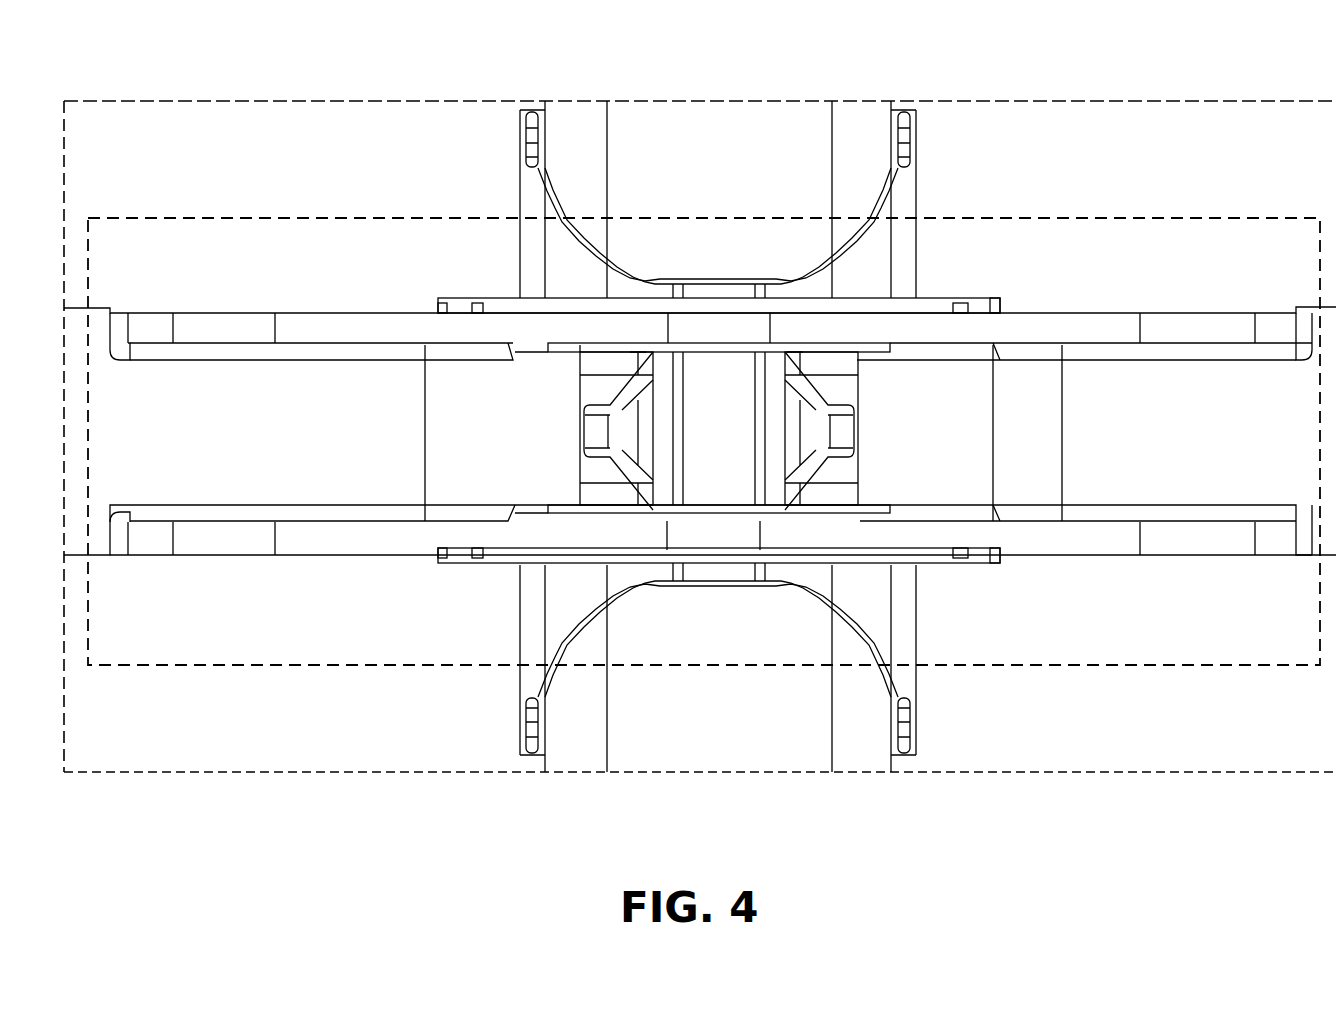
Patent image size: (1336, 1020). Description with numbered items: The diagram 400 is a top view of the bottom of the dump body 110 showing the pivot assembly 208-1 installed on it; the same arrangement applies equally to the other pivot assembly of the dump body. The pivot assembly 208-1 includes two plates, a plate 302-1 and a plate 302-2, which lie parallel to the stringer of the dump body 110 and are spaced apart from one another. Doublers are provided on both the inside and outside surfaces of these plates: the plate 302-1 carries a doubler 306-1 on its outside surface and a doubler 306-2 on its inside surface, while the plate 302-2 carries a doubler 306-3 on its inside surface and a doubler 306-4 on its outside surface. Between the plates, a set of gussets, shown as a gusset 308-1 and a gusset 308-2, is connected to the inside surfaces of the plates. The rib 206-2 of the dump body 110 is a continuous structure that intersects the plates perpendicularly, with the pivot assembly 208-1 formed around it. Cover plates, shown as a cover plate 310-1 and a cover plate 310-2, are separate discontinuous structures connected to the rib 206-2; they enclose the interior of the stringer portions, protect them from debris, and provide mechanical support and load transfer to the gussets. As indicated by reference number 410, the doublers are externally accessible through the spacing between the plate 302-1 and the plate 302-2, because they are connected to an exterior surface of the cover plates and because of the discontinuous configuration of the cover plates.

The diagram 400 is at (172, 22).
The dump body 110 is at (700, 416).
The pivot assembly 208-1 is at (1136, 218).
The plate 302-1 is at (356, 312).
The plate 302-2 is at (304, 541).
The doubler 306-1 is at (994, 300).
The doubler 306-2 is at (879, 345).
The doubler 306-3 is at (882, 505).
The doubler 306-4 is at (947, 551).
The gusset 308-1 is at (598, 377).
The gusset 308-2 is at (851, 399).
The cover plate 310-1 is at (401, 433).
The cover plate 310-2 is at (1069, 433).
The rib 206-2 is at (719, 428).
The external accessibility of the doublers 410 is at (793, 346).